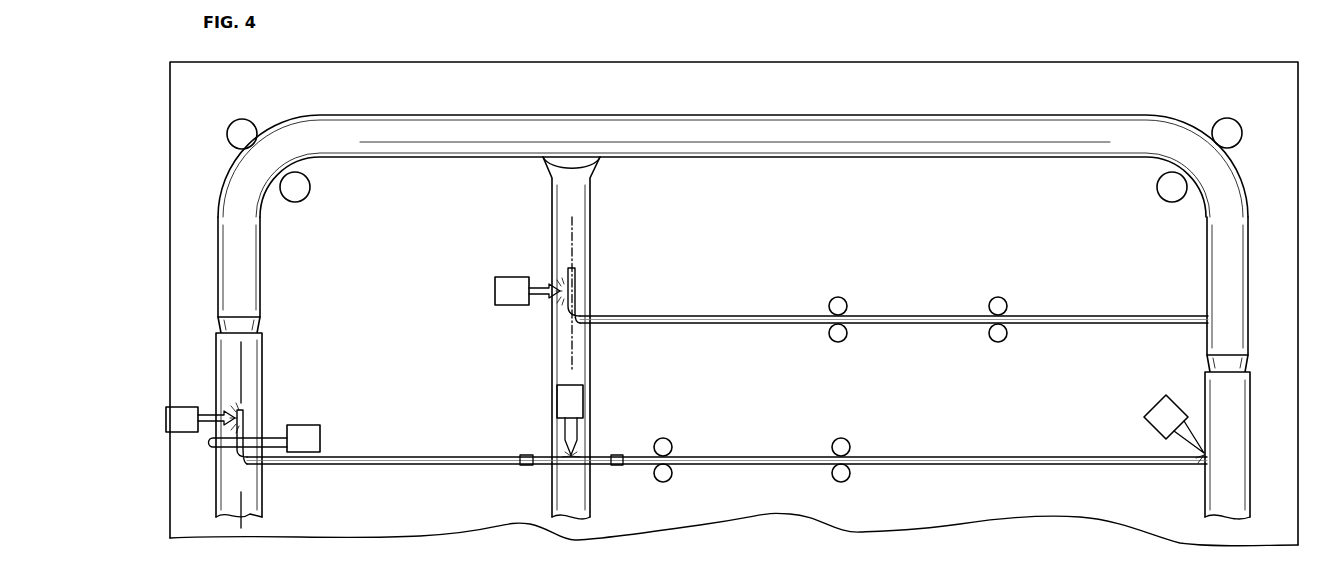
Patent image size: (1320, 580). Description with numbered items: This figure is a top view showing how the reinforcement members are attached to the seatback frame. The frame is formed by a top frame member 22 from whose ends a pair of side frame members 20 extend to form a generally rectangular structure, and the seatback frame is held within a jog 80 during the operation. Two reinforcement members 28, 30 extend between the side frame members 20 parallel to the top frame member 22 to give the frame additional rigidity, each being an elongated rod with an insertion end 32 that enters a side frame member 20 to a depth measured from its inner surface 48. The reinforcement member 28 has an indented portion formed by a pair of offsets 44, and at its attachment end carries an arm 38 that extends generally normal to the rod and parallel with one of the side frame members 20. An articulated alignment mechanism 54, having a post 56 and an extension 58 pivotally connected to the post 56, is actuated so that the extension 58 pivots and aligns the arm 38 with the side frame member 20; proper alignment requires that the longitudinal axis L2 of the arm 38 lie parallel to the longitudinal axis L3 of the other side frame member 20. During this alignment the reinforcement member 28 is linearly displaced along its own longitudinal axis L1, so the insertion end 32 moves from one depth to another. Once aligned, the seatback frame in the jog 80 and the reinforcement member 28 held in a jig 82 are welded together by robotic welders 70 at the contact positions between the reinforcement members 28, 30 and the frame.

The side frame member 20 is at (1251, 390).
The top frame member 22 is at (806, 130).
The reinforcement member 28 is at (757, 456).
The reinforcement member 30 is at (915, 315).
The insertion end 32 is at (1208, 316).
The arm 38 is at (245, 428).
The offset 44 is at (527, 467).
The inner surface 48 is at (1208, 498).
The articulated alignment mechanism 54 is at (326, 433).
The post 56 is at (305, 452).
The extension 58 is at (209, 446).
The robotic welder 70 is at (185, 407).
The jog 80 is at (300, 185).
The jig 82 is at (840, 297).
The longitudinal axis L1 is at (1025, 422).
The longitudinal axis L2 is at (243, 370).
The longitudinal axis L3 is at (243, 492).